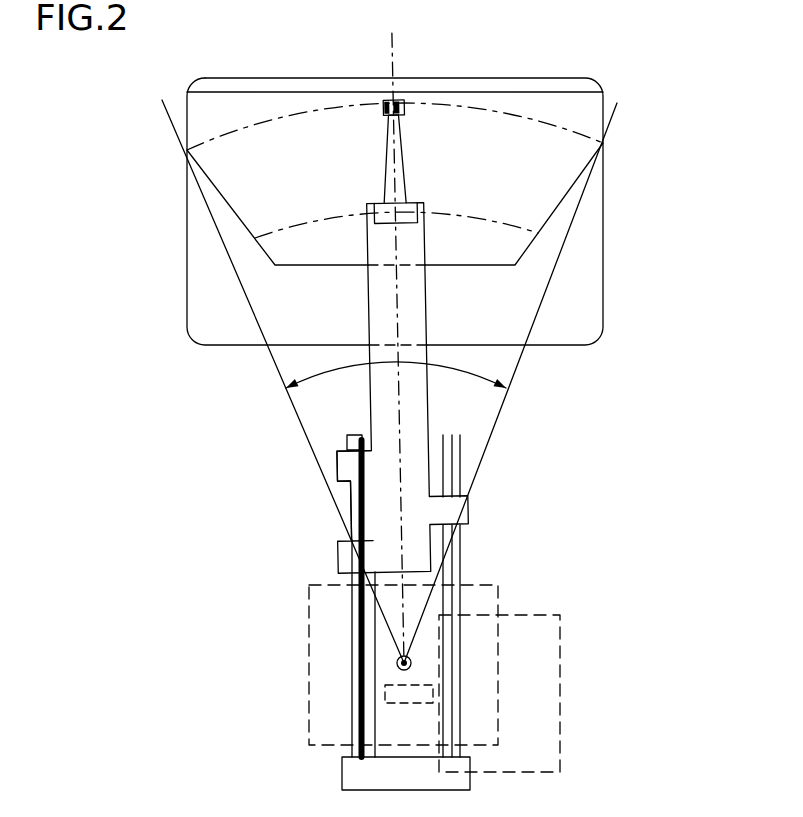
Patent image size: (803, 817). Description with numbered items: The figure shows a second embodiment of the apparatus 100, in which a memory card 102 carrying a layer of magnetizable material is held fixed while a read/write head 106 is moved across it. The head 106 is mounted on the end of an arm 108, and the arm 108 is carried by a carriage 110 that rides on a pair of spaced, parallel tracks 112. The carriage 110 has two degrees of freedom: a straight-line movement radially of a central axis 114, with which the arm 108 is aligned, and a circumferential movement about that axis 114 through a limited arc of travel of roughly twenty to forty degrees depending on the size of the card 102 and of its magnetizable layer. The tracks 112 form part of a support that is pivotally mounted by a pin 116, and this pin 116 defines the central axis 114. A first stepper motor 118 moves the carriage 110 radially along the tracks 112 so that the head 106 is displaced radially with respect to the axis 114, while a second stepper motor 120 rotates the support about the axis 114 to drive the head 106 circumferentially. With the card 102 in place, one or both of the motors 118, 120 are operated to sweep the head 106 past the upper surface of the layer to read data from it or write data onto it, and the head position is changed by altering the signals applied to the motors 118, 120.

The apparatus 100 is at (550, 488).
The memory card 102 is at (603, 250).
The read/write head 106 is at (394, 113).
The arm 108 is at (412, 172).
The carriage 110 is at (352, 464).
The tracks 112 is at (352, 506).
The central axis 114 is at (400, 671).
The pin 116 is at (397, 662).
The first stepper motor 118 is at (560, 700).
The second stepper motor 120 is at (309, 613).